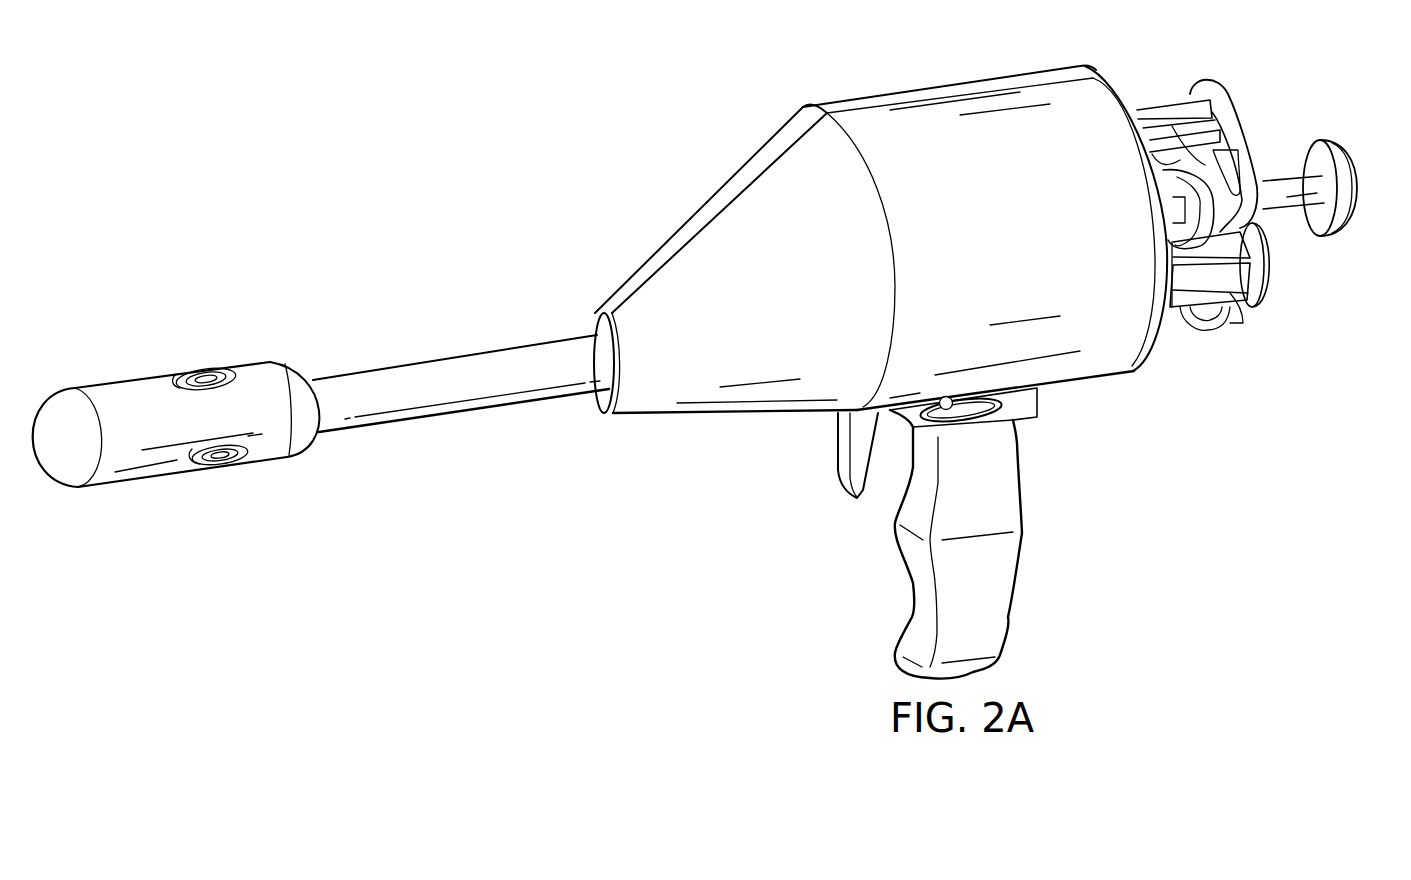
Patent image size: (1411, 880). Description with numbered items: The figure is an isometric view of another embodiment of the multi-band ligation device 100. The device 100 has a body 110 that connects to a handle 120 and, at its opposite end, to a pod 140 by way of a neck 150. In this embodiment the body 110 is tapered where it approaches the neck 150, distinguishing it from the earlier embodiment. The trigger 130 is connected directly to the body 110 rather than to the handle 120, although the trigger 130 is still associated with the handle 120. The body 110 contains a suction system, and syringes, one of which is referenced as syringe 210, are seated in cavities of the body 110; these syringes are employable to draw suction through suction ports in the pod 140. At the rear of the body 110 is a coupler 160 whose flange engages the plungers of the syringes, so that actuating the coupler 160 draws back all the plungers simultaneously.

The multi-band ligation device 100 is at (603, 104).
The body 110 is at (1157, 350).
The handle 120 is at (1013, 593).
The trigger 130 is at (838, 455).
The pod 140 is at (135, 390).
The neck 150 is at (432, 365).
The coupler 160 is at (1337, 143).
The syringe 210 is at (1272, 274).